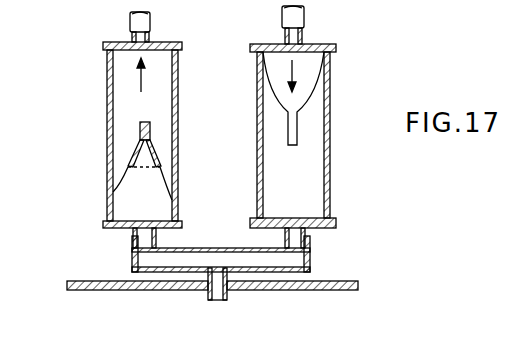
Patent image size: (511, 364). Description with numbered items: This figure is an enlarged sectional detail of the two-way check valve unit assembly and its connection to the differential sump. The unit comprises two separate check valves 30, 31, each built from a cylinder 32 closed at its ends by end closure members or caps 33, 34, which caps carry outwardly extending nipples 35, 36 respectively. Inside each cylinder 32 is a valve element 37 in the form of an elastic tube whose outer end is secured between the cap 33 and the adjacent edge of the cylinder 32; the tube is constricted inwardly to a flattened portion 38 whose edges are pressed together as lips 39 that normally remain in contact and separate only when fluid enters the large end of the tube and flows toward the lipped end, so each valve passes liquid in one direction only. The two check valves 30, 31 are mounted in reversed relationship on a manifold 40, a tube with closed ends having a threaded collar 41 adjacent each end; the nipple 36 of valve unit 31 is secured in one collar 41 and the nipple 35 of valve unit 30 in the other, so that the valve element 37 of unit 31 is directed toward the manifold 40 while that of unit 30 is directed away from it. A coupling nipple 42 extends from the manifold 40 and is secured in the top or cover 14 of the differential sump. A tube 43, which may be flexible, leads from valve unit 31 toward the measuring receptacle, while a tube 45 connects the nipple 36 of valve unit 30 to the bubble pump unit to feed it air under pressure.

The top or cover 14 is at (340, 288).
The check valve 30 is at (104, 169).
The check valve 31 is at (336, 124).
The cylinder 32 is at (108, 126).
The end closure member or cap 33 is at (104, 225).
The end closure member or cap 34 is at (104, 50).
The nipple 35 is at (304, 36).
The nipple 36 is at (152, 38).
The valve element 37 is at (162, 203).
The flattened portion 38 is at (150, 138).
The lips 39 is at (148, 123).
The manifold 40 is at (207, 250).
The threaded collar 41 is at (133, 258).
The coupling nipple 42 is at (228, 296).
The tube 43 is at (283, 15).
The tube 45 is at (130, 19).